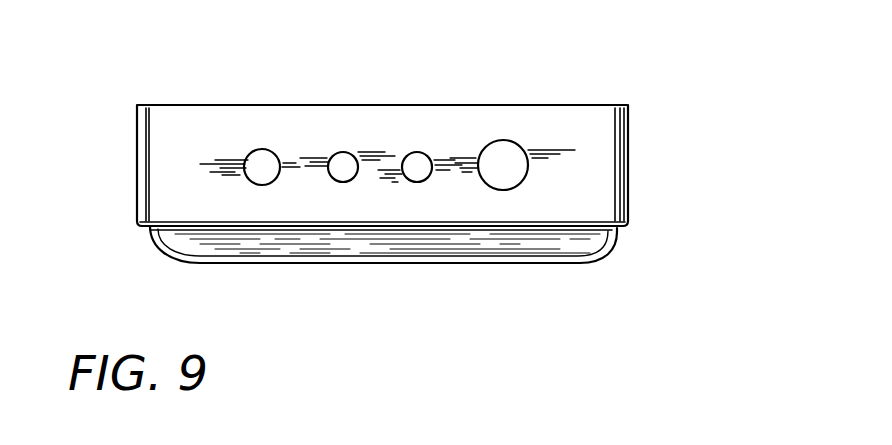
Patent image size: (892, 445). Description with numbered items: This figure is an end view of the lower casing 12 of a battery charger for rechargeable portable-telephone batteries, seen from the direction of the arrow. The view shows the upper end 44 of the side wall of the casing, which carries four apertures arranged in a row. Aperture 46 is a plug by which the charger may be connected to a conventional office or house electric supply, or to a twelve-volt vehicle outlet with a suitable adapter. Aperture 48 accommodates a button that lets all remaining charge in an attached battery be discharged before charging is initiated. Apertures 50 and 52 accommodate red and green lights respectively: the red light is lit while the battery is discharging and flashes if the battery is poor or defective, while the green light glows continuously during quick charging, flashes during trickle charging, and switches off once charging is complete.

The lower casing 12 is at (638, 148).
The upper end 44 is at (378, 205).
The aperture 46 is at (527, 175).
The aperture 48 is at (253, 178).
The aperture 50 is at (432, 173).
The aperture 52 is at (337, 178).